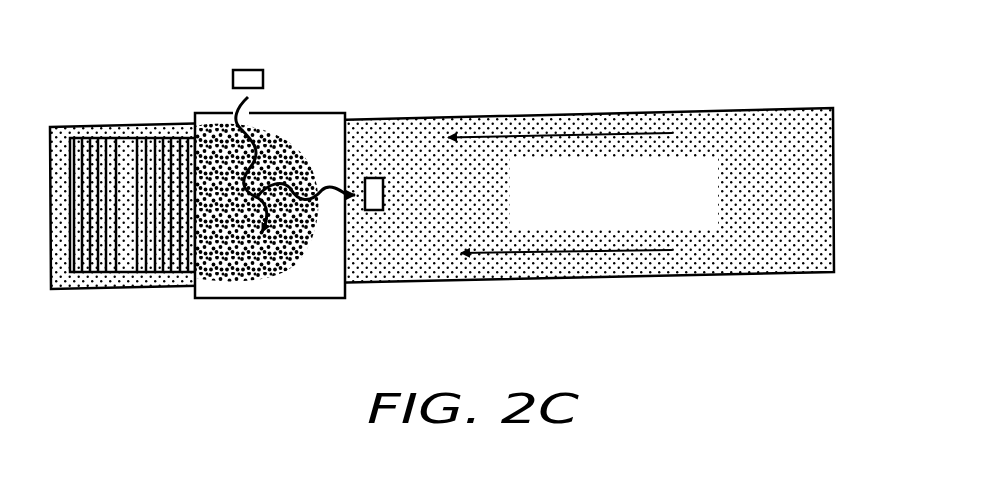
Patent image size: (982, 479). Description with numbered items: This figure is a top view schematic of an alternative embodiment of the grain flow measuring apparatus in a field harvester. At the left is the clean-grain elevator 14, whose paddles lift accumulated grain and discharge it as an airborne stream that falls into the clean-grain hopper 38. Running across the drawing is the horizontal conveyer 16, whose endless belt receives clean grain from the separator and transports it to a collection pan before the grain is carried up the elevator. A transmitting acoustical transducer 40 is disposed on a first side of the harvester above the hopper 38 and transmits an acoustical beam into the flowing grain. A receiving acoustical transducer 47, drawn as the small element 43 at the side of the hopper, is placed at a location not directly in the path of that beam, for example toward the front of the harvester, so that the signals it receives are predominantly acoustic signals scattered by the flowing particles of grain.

The clean-grain elevator assembly 14 is at (107, 140).
The horizontal conveyer 16 is at (701, 222).
The clean-grain hopper 38 is at (306, 110).
The transmitting acoustical transducer 40 is at (238, 70).
The receiving transducer element 43 is at (390, 194).
The receiving acoustical transducer 47 is at (585, 256).